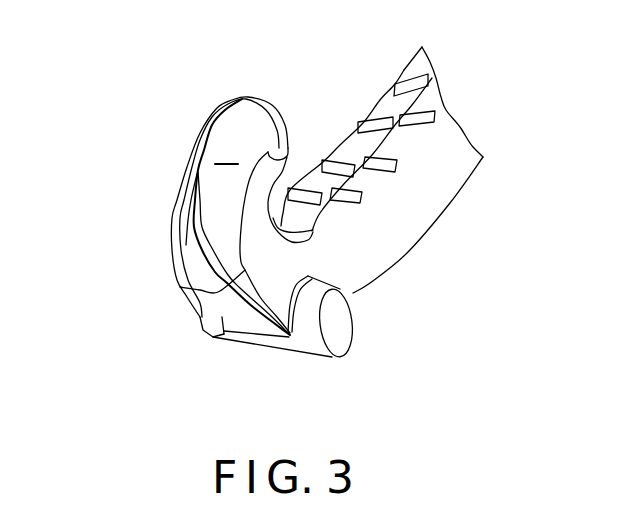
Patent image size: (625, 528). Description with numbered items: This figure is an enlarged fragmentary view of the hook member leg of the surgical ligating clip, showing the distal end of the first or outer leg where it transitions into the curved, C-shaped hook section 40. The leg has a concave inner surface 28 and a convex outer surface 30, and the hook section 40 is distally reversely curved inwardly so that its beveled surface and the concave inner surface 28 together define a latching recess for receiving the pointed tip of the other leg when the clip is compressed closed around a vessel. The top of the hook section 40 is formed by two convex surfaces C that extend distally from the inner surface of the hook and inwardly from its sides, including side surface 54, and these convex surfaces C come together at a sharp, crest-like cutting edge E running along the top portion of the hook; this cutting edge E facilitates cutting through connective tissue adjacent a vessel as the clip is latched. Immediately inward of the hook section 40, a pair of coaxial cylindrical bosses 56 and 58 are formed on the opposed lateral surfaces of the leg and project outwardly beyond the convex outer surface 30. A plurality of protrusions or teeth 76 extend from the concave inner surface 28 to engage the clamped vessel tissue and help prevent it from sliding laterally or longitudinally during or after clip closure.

The concave inner surface 28 is at (346, 135).
The convex outer surface 30 is at (225, 338).
The hook section 40 is at (124, 128).
The side surface 54 is at (418, 210).
The cylindrical boss 56 is at (200, 321).
The cylindrical boss 58 is at (353, 317).
The protrusions or teeth 76 is at (412, 122).
The convex surfaces C is at (187, 162).
The cutting edge E is at (208, 133).